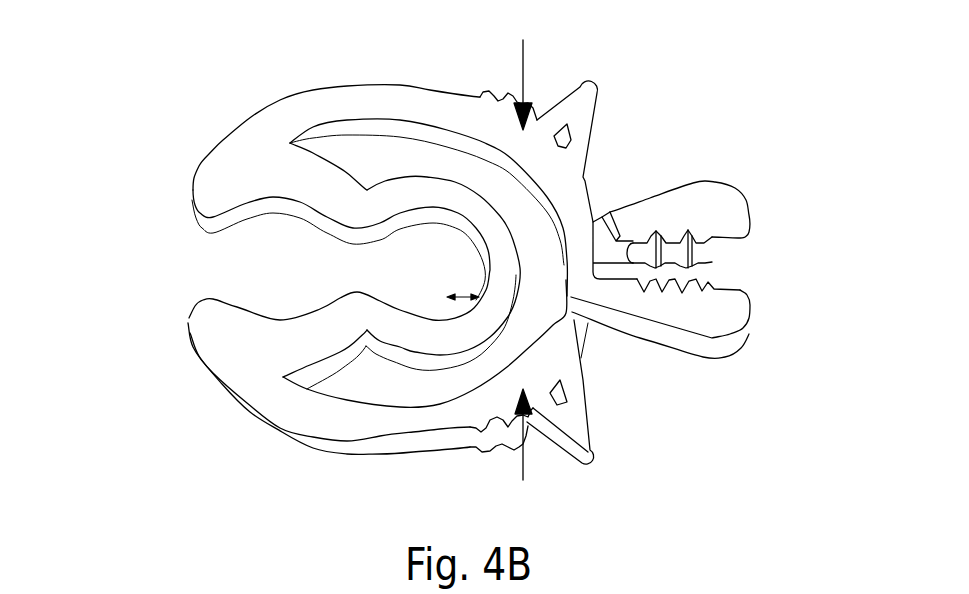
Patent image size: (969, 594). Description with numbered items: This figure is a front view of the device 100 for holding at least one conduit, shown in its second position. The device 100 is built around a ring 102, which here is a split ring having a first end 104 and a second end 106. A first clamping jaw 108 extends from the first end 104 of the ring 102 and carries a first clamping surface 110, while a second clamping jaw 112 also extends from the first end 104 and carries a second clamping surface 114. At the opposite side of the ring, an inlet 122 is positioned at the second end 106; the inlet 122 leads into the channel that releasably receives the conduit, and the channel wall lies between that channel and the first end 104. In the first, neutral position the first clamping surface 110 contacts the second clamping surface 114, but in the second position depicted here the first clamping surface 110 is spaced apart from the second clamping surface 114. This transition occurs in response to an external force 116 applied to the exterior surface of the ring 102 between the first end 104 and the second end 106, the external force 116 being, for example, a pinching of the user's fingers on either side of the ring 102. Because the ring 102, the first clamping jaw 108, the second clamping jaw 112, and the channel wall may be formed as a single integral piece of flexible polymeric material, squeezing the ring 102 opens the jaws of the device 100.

The device 100 is at (111, 87).
The ring 102 is at (273, 400).
The first end 104 is at (601, 182).
The second end 106 is at (178, 317).
The first clamping jaw 108 is at (725, 340).
The first clamping surface 110 is at (705, 288).
The second clamping jaw 112 is at (723, 212).
The second clamping surface 114 is at (739, 250).
The external force 116 is at (521, 53).
The inlet 122 is at (198, 258).